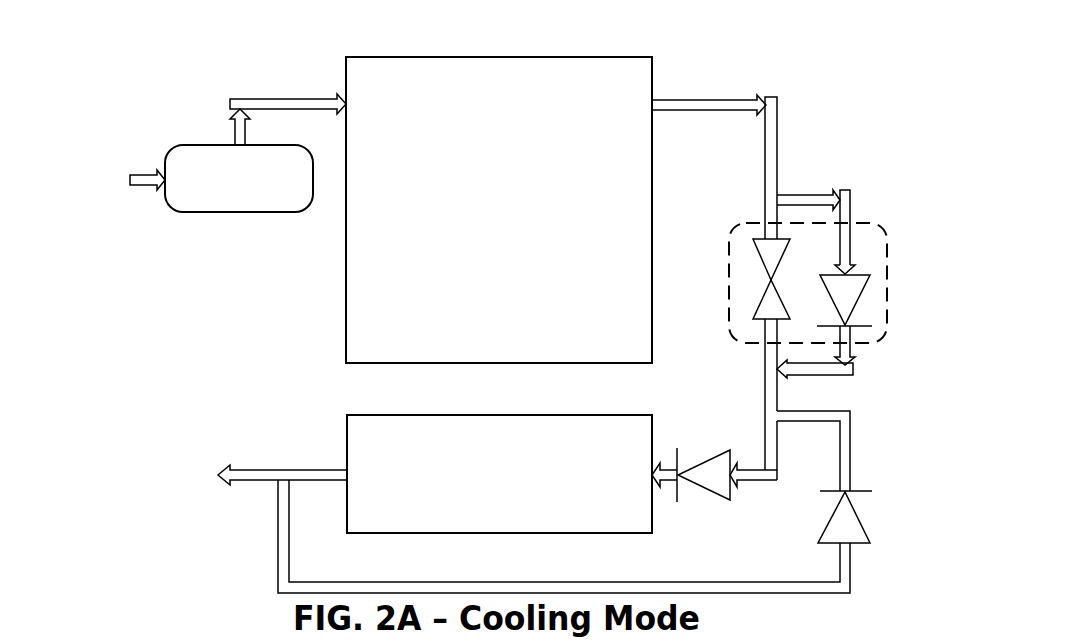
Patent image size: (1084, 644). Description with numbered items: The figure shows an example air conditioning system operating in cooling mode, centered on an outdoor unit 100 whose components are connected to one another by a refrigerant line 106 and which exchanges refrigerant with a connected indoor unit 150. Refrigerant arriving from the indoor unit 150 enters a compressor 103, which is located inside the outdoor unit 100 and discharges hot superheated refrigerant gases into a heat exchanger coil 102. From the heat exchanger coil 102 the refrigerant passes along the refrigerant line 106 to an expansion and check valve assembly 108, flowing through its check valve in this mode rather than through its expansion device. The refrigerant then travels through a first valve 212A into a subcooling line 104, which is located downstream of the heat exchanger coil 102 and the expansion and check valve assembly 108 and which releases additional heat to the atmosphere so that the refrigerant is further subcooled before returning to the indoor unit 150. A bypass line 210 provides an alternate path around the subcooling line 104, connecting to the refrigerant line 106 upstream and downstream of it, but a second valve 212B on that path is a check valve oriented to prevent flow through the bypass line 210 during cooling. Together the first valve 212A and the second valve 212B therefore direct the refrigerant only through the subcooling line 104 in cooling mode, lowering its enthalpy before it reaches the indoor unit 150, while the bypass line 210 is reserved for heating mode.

The outdoor unit 100 is at (323, 30).
The heat exchanger coil 102 is at (478, 237).
The compressor 103 is at (219, 204).
The subcooling line 104 is at (478, 501).
The refrigerant line 106 is at (737, 100).
The expansion and check valve assembly 108 is at (888, 254).
The indoor unit 150 is at (185, 529).
The bypass line 210 is at (722, 581).
The first valve 212A is at (710, 452).
The second valve 212B is at (861, 521).